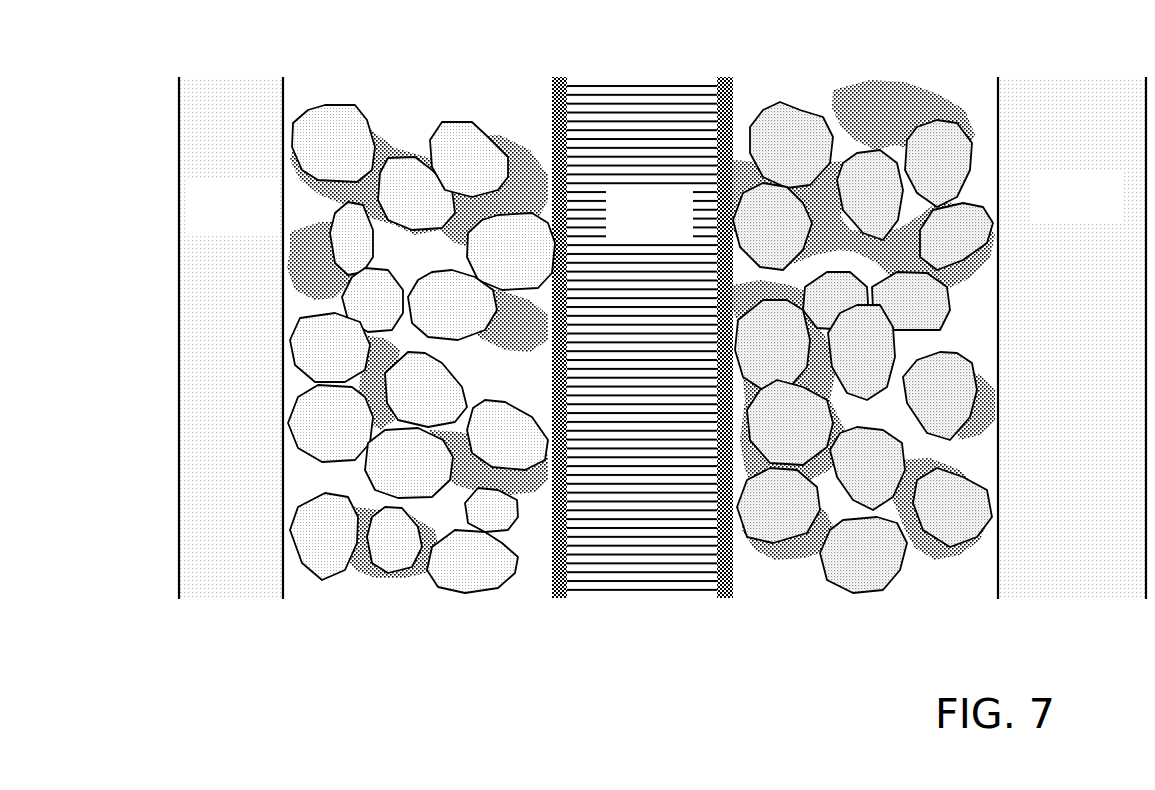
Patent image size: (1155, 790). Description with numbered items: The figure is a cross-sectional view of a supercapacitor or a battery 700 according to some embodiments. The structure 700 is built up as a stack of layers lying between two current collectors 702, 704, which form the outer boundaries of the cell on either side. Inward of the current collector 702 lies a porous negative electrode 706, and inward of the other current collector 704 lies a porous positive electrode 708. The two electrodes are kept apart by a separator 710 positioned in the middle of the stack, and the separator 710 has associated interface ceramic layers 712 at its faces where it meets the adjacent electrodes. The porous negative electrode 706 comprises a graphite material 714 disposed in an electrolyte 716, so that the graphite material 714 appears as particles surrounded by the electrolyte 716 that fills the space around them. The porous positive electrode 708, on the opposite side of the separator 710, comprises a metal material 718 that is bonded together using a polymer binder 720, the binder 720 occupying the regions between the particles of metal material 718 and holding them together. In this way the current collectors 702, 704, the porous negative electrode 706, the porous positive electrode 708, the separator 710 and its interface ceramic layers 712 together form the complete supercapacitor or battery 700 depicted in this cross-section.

The supercapacitor or battery 700 is at (652, 360).
The current collector 702 is at (258, 223).
The current collector 704 is at (1102, 211).
The porous negative electrode 706 is at (421, 355).
The porous positive electrode 708 is at (864, 349).
The separator 710 is at (642, 308).
The interface ceramic layers 712 is at (721, 79).
The graphite material 714 is at (458, 573).
The electrolyte 716 is at (300, 572).
The metal material 718 is at (795, 507).
The polymer binder 720 is at (922, 523).